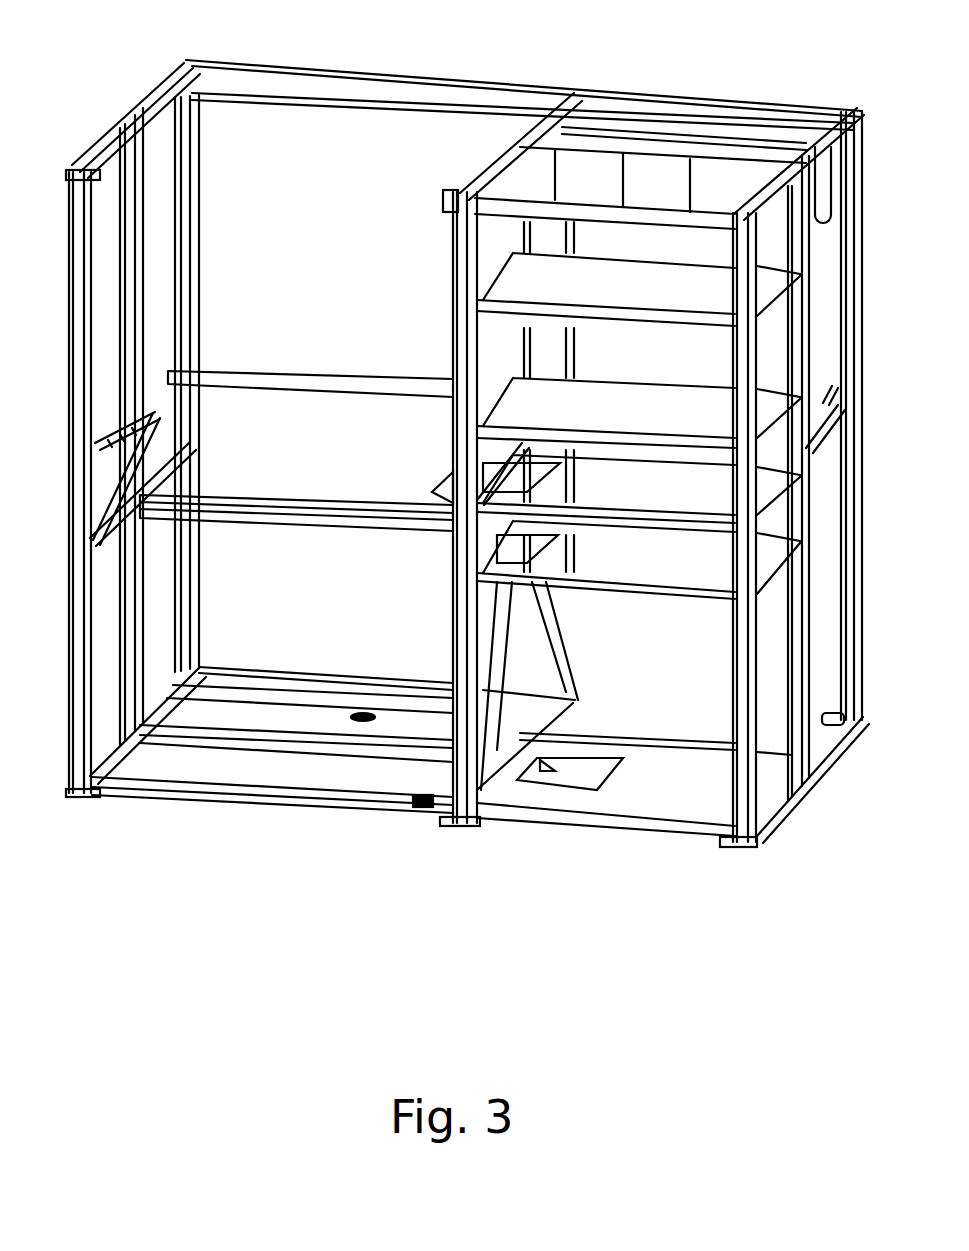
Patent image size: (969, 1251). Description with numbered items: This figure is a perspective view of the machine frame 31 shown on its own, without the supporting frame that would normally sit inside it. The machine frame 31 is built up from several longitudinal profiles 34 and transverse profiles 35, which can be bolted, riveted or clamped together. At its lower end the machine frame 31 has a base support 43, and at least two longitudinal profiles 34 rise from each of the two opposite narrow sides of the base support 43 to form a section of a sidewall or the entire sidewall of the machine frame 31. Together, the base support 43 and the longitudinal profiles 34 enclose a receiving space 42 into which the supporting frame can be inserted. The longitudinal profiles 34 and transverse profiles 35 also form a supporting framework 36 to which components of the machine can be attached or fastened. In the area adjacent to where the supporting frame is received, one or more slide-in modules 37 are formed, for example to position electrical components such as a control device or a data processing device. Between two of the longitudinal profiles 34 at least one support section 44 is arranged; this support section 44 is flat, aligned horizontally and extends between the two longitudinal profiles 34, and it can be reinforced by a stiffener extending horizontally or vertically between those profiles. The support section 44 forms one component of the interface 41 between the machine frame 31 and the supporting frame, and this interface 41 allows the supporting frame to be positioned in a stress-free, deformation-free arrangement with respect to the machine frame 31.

The machine frame 31 is at (406, 853).
The longitudinal profiles 34 is at (133, 252).
The transverse profiles 35 is at (128, 125).
The supporting framework 36 is at (873, 535).
The slide-in modules 37 is at (710, 373).
The interface 41 is at (108, 410).
The receiving space 42 is at (277, 773).
The base support 43 is at (307, 823).
The support section 44 is at (112, 436).